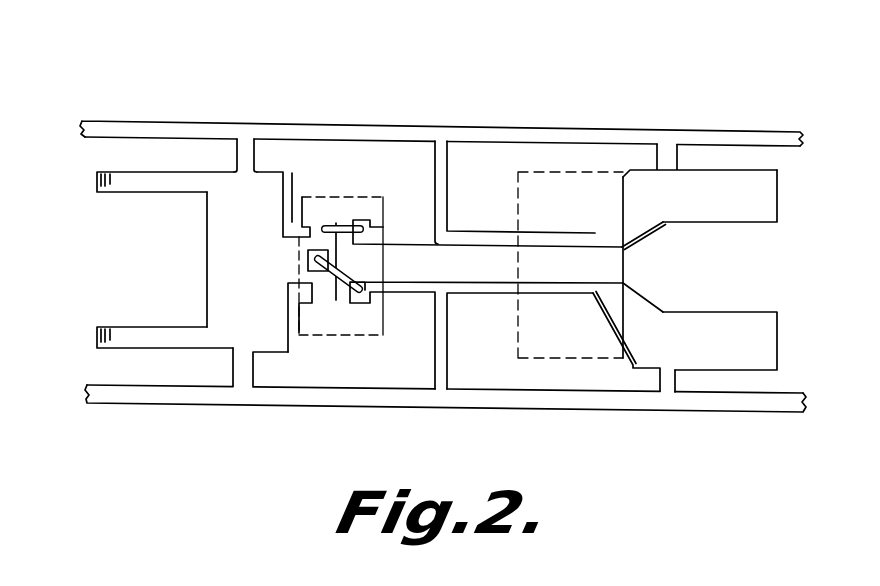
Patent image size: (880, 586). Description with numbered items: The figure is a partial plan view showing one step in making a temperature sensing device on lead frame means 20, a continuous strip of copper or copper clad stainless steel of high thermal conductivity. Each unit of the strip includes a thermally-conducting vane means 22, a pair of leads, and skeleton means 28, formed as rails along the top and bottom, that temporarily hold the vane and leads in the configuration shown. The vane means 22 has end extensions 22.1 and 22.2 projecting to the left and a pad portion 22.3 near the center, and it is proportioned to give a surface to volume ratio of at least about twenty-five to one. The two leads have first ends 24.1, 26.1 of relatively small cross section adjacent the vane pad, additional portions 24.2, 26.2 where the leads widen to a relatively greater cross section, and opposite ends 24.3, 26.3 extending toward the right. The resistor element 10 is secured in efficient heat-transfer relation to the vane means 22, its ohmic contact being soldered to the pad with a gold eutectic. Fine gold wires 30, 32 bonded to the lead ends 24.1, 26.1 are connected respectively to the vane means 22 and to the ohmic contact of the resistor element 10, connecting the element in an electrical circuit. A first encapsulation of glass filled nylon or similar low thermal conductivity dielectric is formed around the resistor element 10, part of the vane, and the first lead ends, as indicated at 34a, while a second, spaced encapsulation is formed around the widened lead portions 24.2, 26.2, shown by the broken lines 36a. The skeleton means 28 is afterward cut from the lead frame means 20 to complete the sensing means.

The resistor element 10 is at (306, 259).
The lead frame means 20 is at (492, 124).
The thermally-conducting vane means 22 is at (232, 203).
The end extension 22.1 is at (117, 188).
The end extension 22.2 is at (117, 333).
The pad portion 22.3 is at (328, 303).
The first end of lead 24.1 is at (380, 226).
The additional portion of lead 24.2 is at (595, 233).
The opposite end of lead 24.3 is at (760, 203).
The first end of lead 26.1 is at (382, 292).
The additional portion of lead 26.2 is at (615, 308).
The opposite end of lead 26.3 is at (757, 346).
The skeleton means 28 is at (322, 128).
The fine gold wire 30 is at (345, 224).
The fine gold wire 32 is at (349, 290).
The first encapsulation 34a is at (314, 198).
The second encapsulation 36a is at (549, 187).